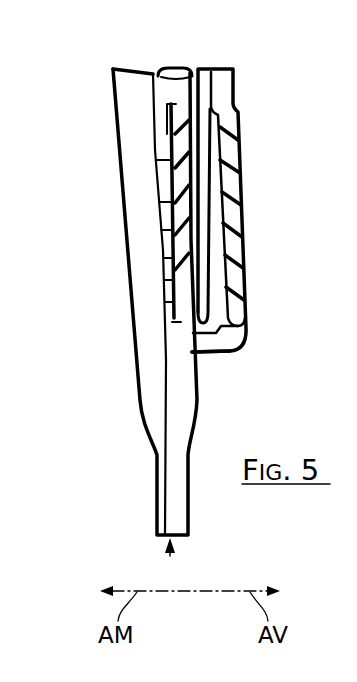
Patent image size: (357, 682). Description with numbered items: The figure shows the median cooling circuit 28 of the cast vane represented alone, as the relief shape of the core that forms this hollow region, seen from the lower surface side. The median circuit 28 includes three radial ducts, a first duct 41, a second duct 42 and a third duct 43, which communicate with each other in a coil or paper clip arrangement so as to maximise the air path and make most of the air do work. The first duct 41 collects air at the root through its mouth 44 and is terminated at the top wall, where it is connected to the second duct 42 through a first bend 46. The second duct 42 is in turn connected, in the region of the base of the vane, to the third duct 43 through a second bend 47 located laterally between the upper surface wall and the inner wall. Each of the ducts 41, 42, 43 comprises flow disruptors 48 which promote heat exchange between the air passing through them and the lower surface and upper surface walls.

The median circuit 28 is at (103, 138).
The first duct 41 is at (123, 197).
The second duct 42 is at (192, 137).
The third duct 43 is at (207, 247).
The mouth 44 is at (170, 556).
The first bend 46 is at (167, 72).
The second bend 47 is at (231, 352).
The flow disruptors 48 is at (178, 175).